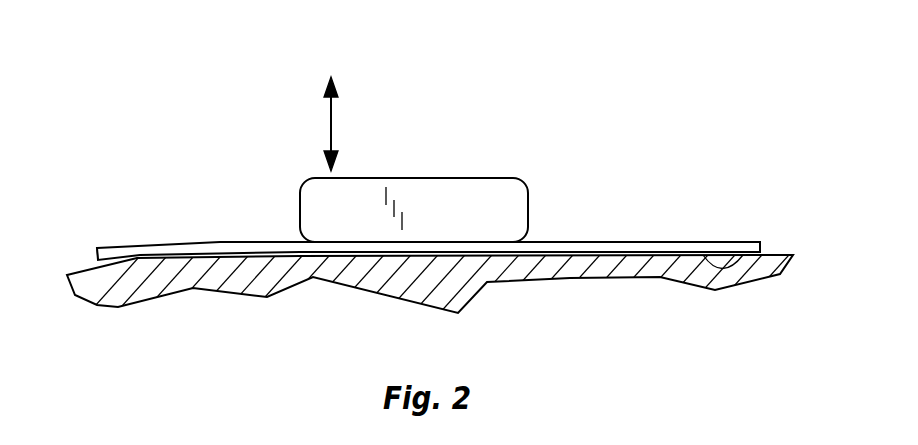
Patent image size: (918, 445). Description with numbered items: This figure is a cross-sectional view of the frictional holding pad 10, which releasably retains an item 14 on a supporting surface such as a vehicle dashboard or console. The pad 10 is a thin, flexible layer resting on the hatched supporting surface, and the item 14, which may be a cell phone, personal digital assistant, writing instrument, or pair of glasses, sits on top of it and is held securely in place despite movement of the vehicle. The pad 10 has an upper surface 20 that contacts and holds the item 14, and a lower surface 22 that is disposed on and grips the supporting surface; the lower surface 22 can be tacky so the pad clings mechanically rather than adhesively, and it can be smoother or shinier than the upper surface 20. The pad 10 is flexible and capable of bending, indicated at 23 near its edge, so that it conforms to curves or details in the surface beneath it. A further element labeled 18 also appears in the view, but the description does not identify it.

The frictional holding pad 10 is at (425, 224).
The item 14 is at (486, 172).
The substrate surface 18 is at (87, 267).
The upper surface 20 is at (630, 240).
The lower surface 22 is at (738, 265).
The bending 23 is at (124, 232).